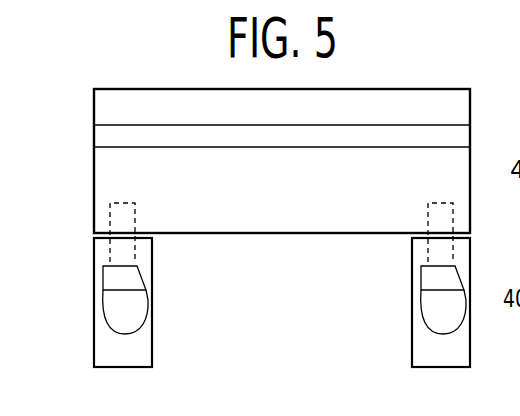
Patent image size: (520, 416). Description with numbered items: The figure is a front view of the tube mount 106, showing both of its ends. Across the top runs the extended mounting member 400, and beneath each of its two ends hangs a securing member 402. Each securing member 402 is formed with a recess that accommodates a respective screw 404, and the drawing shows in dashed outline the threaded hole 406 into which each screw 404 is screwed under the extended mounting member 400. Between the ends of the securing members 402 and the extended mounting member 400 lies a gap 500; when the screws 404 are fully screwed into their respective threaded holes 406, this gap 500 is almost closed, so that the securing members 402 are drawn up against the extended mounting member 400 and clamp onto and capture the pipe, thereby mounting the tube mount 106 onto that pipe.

The tube mount 106 is at (421, 68).
The extended mounting member 400 is at (68, 181).
The securing member 402 is at (161, 340).
The screw 404 is at (115, 279).
The threaded hole 406 is at (118, 228).
The gap 500 is at (118, 319).